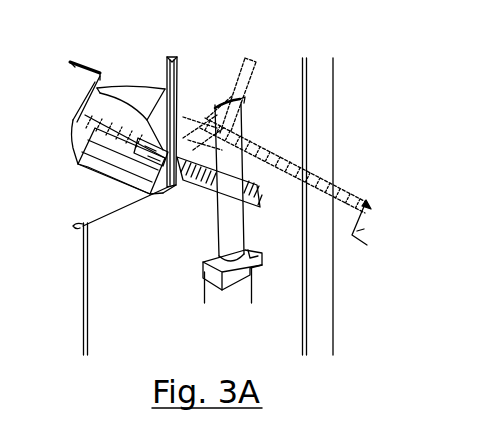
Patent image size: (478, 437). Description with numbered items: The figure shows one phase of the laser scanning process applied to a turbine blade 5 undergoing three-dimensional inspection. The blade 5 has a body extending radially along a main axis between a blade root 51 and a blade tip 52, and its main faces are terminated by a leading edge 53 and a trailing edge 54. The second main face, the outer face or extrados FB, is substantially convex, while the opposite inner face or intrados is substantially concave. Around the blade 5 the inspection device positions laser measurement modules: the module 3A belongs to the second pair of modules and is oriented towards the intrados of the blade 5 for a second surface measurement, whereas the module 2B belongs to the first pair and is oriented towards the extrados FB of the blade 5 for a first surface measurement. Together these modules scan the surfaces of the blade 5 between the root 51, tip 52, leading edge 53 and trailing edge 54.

The laser measurement module 3A is at (73, 62).
The blade 5 is at (253, 82).
The blade root 51 is at (205, 280).
The blade tip 52 is at (223, 104).
The leading edge 53 is at (218, 222).
The trailing edge 54 is at (243, 229).
The second main face (extrados) FB is at (236, 172).
The laser measurement module 2B is at (368, 228).